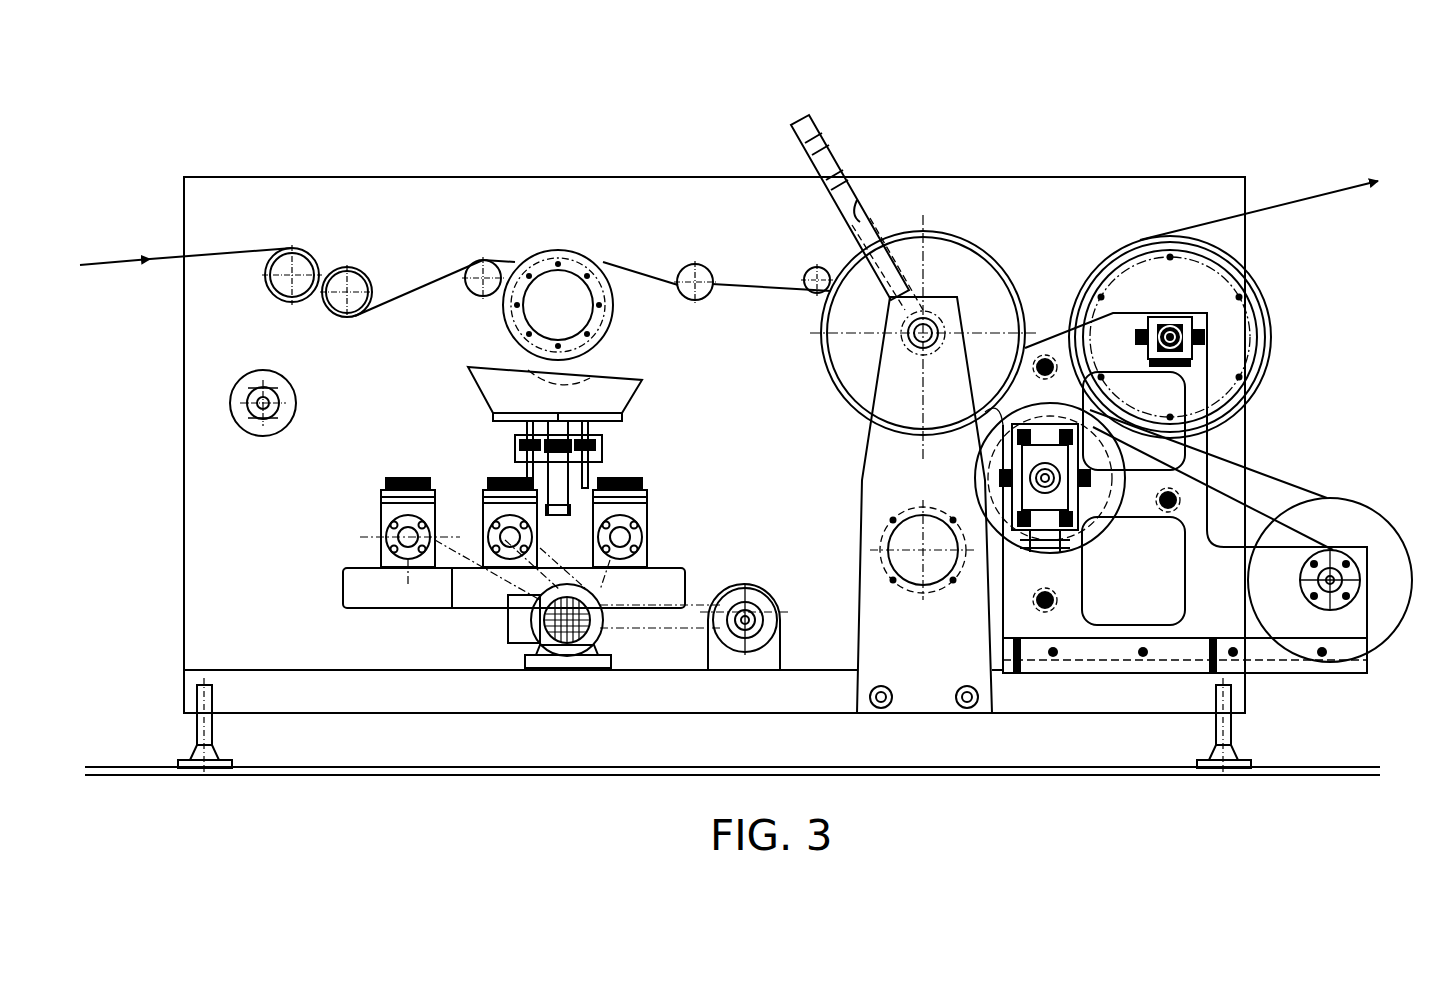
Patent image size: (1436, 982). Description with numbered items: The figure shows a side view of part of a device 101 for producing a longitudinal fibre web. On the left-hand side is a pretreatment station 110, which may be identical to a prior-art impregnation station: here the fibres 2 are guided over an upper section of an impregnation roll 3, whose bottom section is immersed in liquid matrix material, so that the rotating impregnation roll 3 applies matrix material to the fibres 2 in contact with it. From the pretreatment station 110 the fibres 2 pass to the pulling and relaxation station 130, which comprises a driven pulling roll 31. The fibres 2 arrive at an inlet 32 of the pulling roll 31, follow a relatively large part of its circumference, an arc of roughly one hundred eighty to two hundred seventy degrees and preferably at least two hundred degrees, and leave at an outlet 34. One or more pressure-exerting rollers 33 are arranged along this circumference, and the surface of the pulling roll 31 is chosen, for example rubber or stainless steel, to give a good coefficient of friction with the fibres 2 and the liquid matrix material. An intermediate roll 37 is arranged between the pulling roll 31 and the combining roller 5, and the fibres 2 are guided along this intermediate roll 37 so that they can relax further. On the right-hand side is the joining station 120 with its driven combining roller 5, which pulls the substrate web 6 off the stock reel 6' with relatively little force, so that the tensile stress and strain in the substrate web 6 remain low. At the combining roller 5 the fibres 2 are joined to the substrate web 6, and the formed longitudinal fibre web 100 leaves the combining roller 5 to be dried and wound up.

The device 101 is at (372, 142).
The pretreatment station 110 is at (557, 157).
The impregnation roll 3 is at (564, 284).
The fibres 2 is at (388, 304).
The pulling and relaxation station 130 is at (940, 134).
The pulling roll 31 is at (961, 267).
The pressure-exerting rollers 33 is at (862, 210).
The inlet 32 is at (828, 293).
The outlet 34 is at (985, 412).
The intermediate roll 37 is at (1005, 477).
The joining station 120 is at (1165, 160).
The combining roller 5 is at (1188, 276).
The longitudinal fibre web 100 is at (1306, 193).
The substrate web 6 is at (1211, 480).
The stock reel 6' is at (1330, 555).